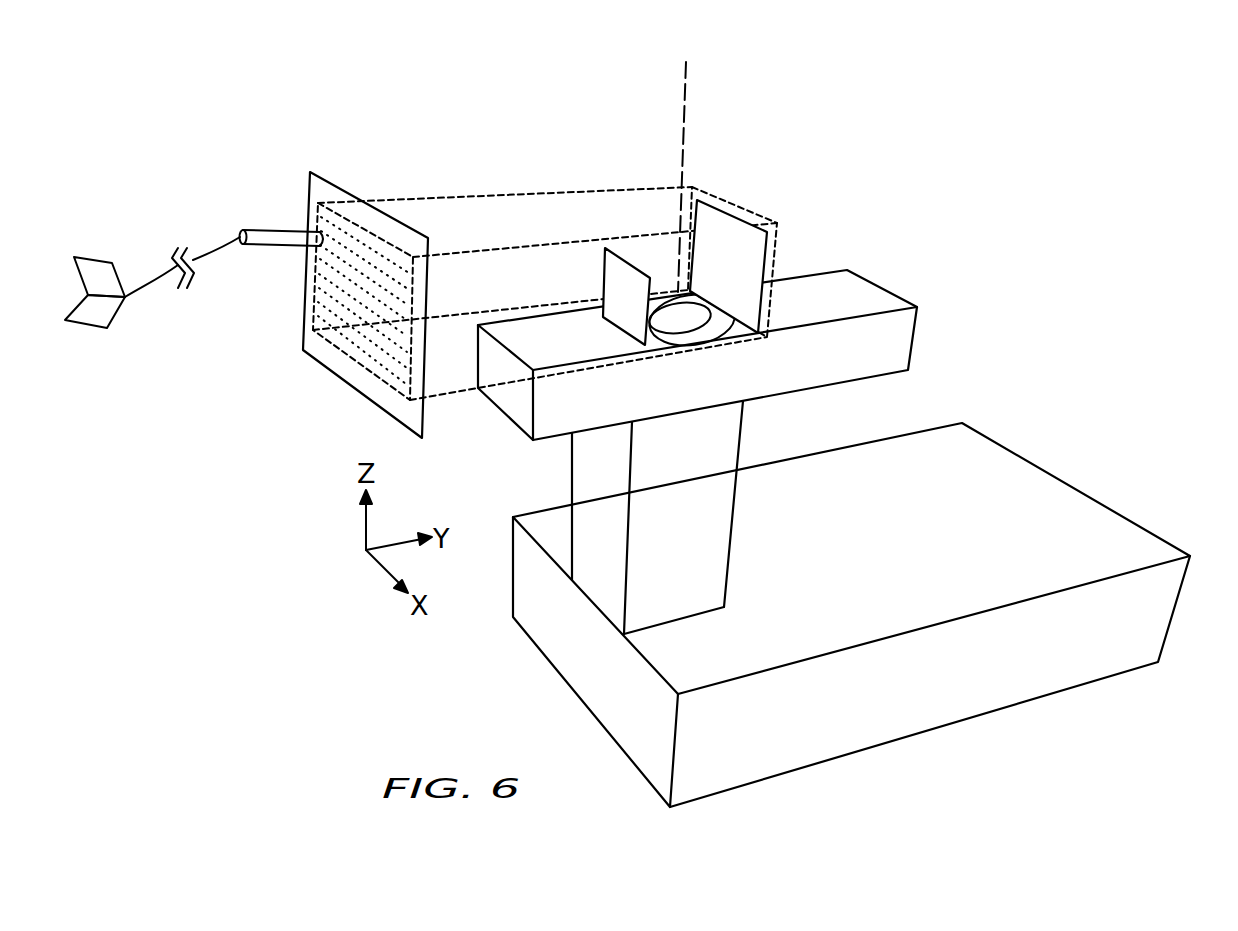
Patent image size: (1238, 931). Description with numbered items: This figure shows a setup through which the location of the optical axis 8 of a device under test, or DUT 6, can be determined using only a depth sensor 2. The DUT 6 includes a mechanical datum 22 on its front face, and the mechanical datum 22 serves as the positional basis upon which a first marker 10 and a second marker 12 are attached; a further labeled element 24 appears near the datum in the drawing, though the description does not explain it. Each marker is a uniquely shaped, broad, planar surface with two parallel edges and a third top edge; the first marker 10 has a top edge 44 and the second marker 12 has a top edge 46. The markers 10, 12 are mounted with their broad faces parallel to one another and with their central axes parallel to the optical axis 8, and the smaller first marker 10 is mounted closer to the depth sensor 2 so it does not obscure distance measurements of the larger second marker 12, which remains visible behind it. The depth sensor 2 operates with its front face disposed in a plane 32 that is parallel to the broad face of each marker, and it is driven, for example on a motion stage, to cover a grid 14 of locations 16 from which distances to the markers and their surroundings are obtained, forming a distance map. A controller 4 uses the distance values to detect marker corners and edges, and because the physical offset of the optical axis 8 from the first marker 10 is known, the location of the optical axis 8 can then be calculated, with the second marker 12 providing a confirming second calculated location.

The depth sensor 2 is at (283, 229).
The controller 4 is at (93, 258).
The DUT 6 is at (713, 441).
The optical axis 8 is at (689, 126).
The first marker 10 is at (545, 276).
The second marker 12 is at (747, 262).
The grid 14 is at (320, 337).
The locations 16 is at (372, 362).
The mechanical datum 22 is at (665, 313).
The outer ring 24 is at (675, 322).
The plane 32 is at (350, 282).
The top edge 44 is at (610, 290).
The top edge 46 is at (760, 190).